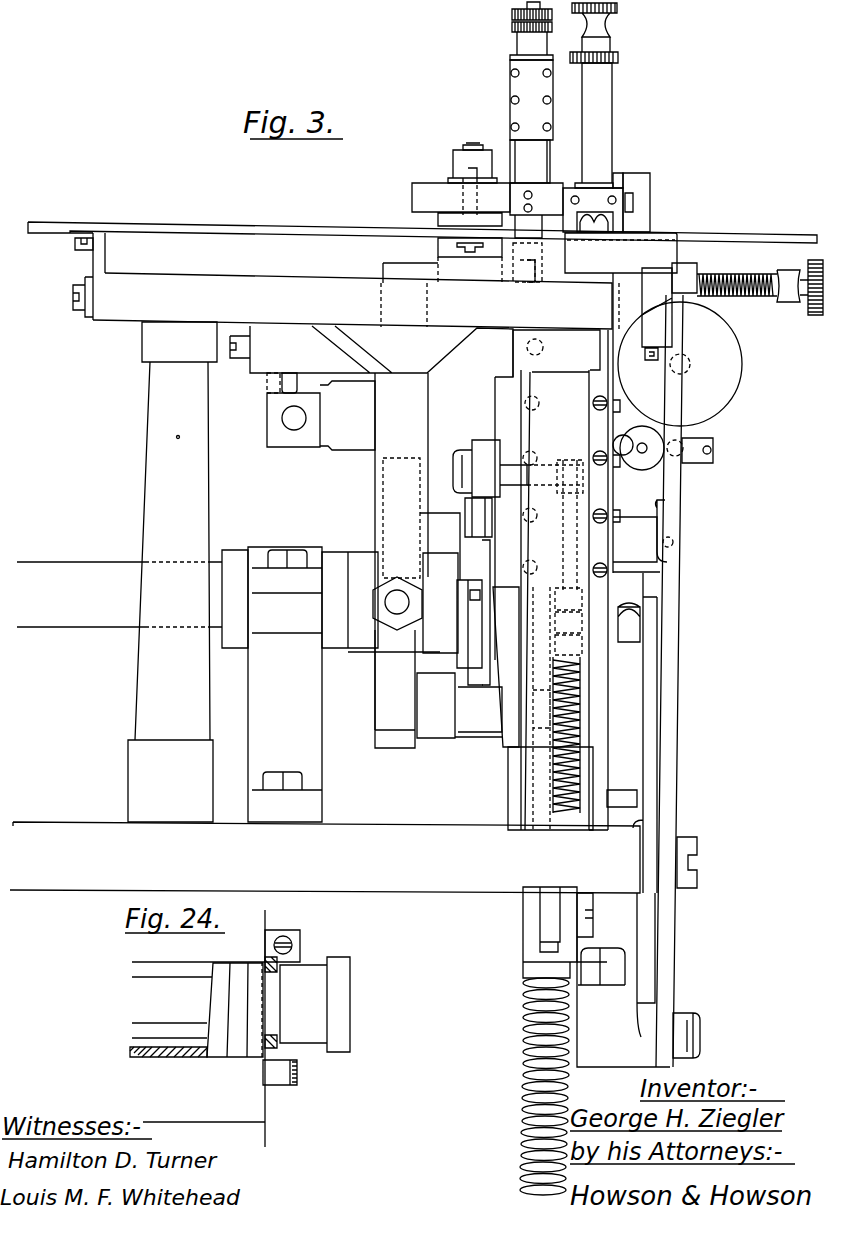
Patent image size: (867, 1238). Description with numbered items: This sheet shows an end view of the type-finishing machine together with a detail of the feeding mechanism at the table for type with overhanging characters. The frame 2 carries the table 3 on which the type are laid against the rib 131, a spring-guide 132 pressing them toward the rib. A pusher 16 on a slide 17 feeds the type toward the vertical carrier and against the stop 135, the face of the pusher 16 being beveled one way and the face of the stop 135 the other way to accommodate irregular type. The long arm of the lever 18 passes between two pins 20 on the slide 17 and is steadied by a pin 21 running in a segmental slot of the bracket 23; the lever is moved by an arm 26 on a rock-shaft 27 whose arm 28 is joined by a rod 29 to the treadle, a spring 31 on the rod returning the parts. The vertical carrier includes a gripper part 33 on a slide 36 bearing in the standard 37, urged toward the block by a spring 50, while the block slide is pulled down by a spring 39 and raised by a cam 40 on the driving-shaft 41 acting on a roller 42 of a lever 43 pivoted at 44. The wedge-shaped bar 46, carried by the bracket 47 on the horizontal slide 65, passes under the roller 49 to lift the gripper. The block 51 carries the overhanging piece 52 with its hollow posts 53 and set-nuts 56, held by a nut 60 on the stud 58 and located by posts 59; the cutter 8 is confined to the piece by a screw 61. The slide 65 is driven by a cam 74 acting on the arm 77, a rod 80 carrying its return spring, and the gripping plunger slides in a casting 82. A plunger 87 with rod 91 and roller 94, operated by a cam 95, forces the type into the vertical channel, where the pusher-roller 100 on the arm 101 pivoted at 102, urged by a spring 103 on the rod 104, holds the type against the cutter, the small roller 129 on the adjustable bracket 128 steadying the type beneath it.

In FIG. 3, the frame 2 is at (495, 393).
In FIG. 3, the table 3 is at (422, 263).
In FIG. 24, the table 3 is at (198, 961).
In FIG. 3, the cutter 8 is at (621, 173).
In FIG. 3, the pusher 16 is at (599, 236).
In FIG. 24, the pusher 16 is at (204, 1007).
In FIG. 3, the slide 17 is at (657, 314).
In FIG. 3, the lever 18 is at (670, 485).
In FIG. 3, the pins 20 is at (683, 274).
In FIG. 3, the pin 21 is at (612, 620).
In FIG. 3, the bracket 23 is at (643, 683).
In FIG. 3, the arm 26 is at (666, 965).
In FIG. 3, the rock-shaft 27 is at (698, 1035).
In FIG. 3, the arm 28 is at (545, 917).
In FIG. 3, the rod 29 is at (523, 1105).
In FIG. 3, the spring 31 is at (522, 1022).
In FIG. 3, the gripper part 33 is at (593, 210).
In FIG. 3, the slide 36 is at (536, 189).
In FIG. 3, the standard 37 is at (512, 111).
In FIG. 3, the spring 39 is at (550, 709).
In FIG. 3, the cam 40 is at (479, 643).
In FIG. 3, the driving-shaft 41 is at (119, 594).
In FIG. 3, the roller 42 is at (488, 520).
In FIG. 3, the lever 43 is at (482, 452).
In FIG. 3, the pivot 44 is at (455, 475).
In FIG. 3, the wedge-shaped bar 46 is at (564, 548).
In FIG. 3, the bracket 47 is at (420, 269).
In FIG. 3, the roller 49 is at (535, 282).
In FIG. 3, the spring 50 is at (517, 58).
In FIG. 3, the block 51 is at (470, 260).
In FIG. 3, the overhanging piece 52 is at (461, 204).
In FIG. 3, the hollow posts 53 is at (605, 122).
In FIG. 3, the set-nuts 56 is at (608, 29).
In FIG. 3, the screw-threaded stud 58 is at (473, 137).
In FIG. 3, the posts 59 is at (474, 196).
In FIG. 3, the nut 60 is at (455, 162).
In FIG. 3, the confining-screw 61 is at (634, 194).
In FIG. 3, the slide 65 is at (371, 351).
In FIG. 3, the cam 74 is at (397, 662).
In FIG. 3, the arm 77 is at (401, 551).
In FIG. 3, the rod 80 is at (283, 418).
In FIG. 3, the casting 82 is at (650, 205).
In FIG. 3, the plunger 87 is at (506, 667).
In FIG. 3, the rod 91 is at (493, 612).
In FIG. 3, the roller 94 is at (459, 705).
In FIG. 3, the cam 95 is at (440, 583).
In FIG. 3, the pusher-roller 100 is at (680, 364).
In FIG. 3, the arm 101 is at (657, 508).
In FIG. 3, the pivot 102 is at (663, 542).
In FIG. 3, the spring 103 is at (745, 268).
In FIG. 3, the rod 104 is at (734, 300).
In FIG. 3, the adjustable bracket 128 is at (700, 443).
In FIG. 3, the small roller 129 is at (638, 450).
In FIG. 24, the rib 131 is at (220, 1091).
In FIG. 24, the spring-guide 132 is at (180, 1057).
In FIG. 24, the stop 135 is at (315, 1004).